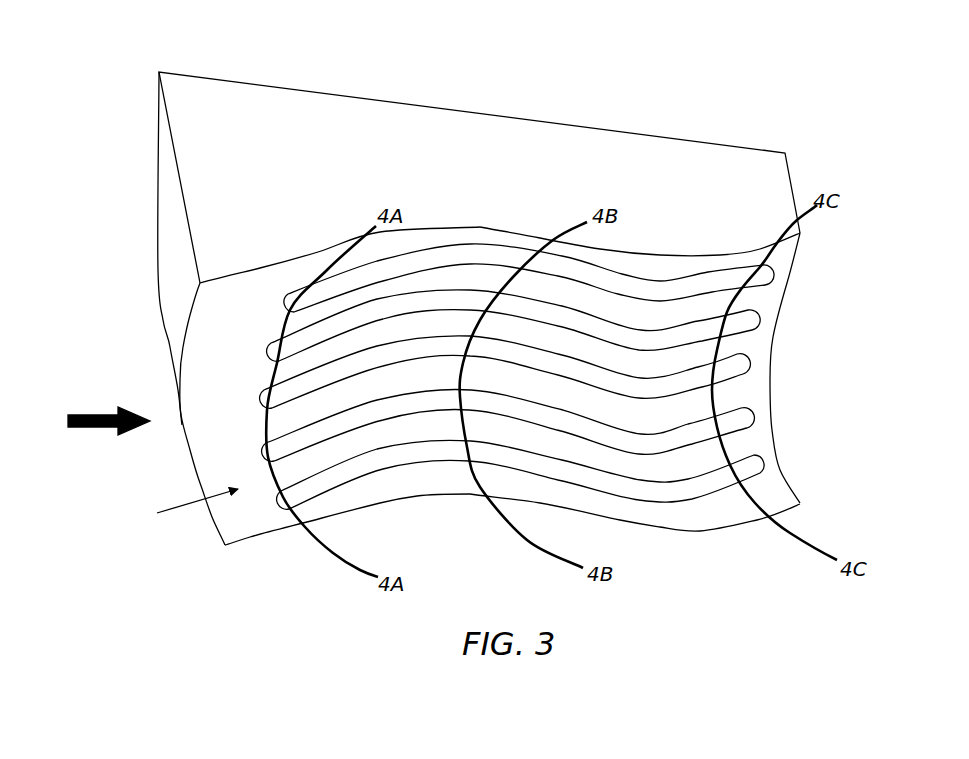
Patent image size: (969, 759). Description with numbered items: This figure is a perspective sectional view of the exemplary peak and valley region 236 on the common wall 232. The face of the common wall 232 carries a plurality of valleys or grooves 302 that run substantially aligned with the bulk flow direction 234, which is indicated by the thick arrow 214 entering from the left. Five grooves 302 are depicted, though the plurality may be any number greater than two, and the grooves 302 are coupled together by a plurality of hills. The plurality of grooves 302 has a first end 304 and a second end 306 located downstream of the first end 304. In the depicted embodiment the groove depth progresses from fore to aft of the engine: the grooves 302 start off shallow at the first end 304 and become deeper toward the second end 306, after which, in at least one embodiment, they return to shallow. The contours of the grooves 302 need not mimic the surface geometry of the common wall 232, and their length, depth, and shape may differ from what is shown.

The peak and valley region 236 is at (487, 82).
The common wall 232 is at (217, 322).
The bulk flow direction 234 is at (180, 503).
The flow direction arrow 214 is at (90, 397).
The plurality of valleys or grooves 302 is at (587, 473).
The first end 304 is at (318, 256).
The second end 306 is at (735, 266).